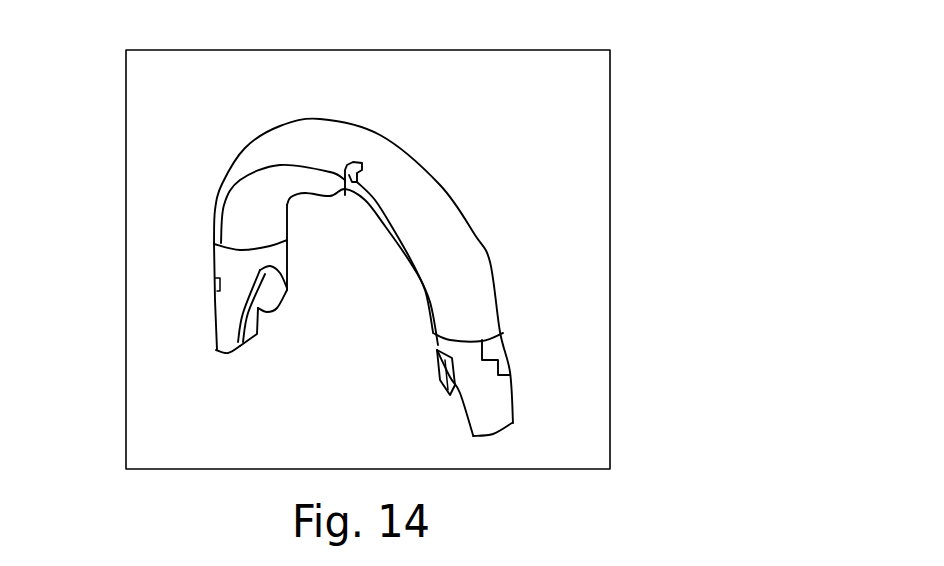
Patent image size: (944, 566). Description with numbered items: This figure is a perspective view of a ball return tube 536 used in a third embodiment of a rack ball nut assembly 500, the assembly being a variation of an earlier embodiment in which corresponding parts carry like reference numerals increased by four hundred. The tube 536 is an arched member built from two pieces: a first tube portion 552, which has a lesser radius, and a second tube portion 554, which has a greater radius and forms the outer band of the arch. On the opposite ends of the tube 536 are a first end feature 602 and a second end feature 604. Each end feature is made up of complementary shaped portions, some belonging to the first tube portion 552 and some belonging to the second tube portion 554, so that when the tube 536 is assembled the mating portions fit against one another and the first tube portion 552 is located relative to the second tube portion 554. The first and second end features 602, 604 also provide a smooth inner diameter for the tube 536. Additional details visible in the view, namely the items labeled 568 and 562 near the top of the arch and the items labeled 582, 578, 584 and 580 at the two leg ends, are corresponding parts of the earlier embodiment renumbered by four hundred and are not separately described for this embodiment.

The rack ball nut assembly 500 is at (505, 50).
The ball return tube 536 is at (450, 240).
The second tube portion 554 is at (407, 178).
The first tube portion 552 is at (385, 228).
The retaining hook 568 is at (358, 157).
The hook base 562 is at (344, 190).
The first end feature 602 is at (186, 262).
The first leg end cap 582 is at (195, 311).
The first leg slot tab 578 is at (261, 330).
The second end feature 604 is at (519, 331).
The second leg end cap 584 is at (524, 388).
The second leg tab 580 is at (458, 398).